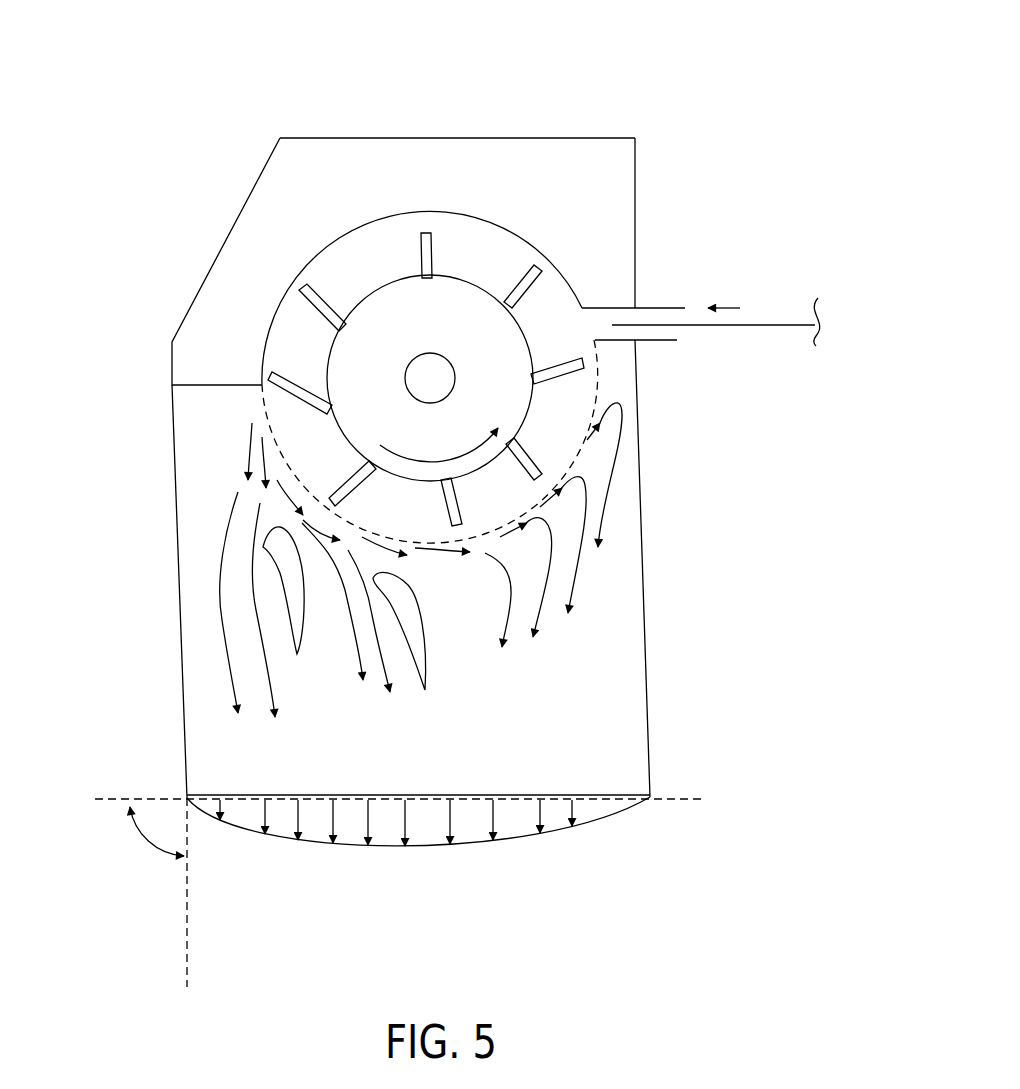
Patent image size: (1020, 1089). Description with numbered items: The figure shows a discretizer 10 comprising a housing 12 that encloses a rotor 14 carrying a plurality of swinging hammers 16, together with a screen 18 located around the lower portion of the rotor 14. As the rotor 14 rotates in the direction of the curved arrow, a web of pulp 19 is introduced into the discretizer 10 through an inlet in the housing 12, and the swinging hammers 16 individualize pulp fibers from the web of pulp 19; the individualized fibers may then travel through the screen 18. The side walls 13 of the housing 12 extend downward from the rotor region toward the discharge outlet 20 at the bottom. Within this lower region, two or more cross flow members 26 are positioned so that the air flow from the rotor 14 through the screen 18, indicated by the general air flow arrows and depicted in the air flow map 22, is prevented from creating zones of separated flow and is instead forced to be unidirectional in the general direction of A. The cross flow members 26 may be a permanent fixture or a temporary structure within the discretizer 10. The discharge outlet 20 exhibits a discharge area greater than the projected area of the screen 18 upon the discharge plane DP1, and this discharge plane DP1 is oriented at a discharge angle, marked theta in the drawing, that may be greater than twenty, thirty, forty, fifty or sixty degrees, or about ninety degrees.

The discretizer 10 is at (661, 178).
The housing 12 is at (540, 138).
The housing side walls 13 is at (176, 527).
The rotor 14 is at (466, 305).
The swinging hammer 16 is at (536, 288).
The screen 18 is at (598, 440).
The web of pulp 19 is at (772, 324).
The discharge outlet 20 is at (246, 802).
The air flow map 22 is at (556, 814).
The cross flow members 26 is at (277, 543).
The discharge plane DP1 is at (375, 884).
The general direction of air flow A is at (421, 819).